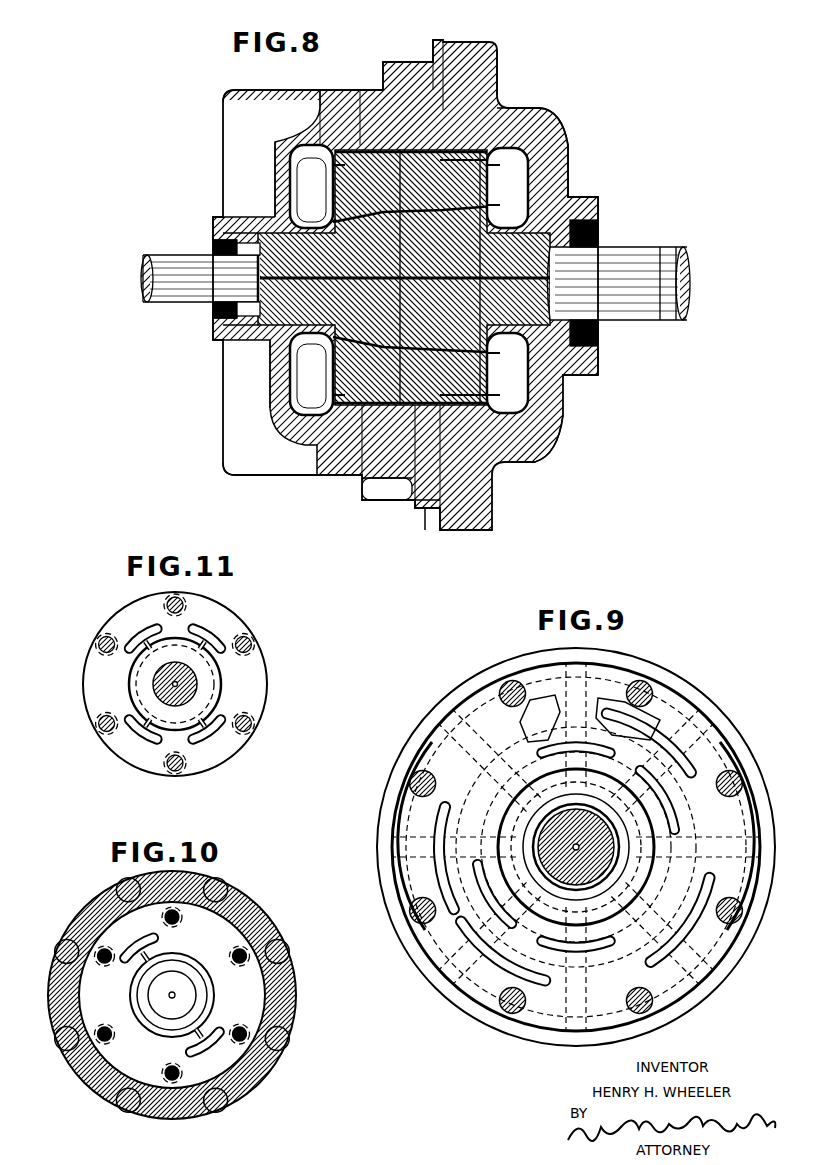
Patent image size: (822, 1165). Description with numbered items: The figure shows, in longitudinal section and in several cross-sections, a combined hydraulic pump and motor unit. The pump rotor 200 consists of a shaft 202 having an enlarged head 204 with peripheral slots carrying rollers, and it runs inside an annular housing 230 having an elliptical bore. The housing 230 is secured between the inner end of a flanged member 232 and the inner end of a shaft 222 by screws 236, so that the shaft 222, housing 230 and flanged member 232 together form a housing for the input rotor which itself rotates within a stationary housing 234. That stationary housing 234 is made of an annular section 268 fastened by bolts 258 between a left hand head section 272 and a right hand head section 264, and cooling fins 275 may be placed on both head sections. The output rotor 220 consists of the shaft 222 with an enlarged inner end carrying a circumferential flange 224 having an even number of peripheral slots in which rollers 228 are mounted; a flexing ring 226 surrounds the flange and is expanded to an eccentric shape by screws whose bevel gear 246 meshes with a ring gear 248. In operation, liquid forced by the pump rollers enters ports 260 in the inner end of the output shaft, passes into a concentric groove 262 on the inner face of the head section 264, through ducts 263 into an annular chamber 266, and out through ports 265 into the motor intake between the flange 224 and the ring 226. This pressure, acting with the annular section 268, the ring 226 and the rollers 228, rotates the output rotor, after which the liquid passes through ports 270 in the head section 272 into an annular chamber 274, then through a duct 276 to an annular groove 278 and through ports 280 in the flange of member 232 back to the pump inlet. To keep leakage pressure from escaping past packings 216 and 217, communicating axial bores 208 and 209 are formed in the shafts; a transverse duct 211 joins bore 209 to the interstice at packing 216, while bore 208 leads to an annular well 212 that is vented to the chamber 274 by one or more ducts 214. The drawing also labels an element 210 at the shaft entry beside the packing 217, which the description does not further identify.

In FIG. 8, the pump rotor 200 is at (143, 255).
In FIG. 8, the shaft 202 is at (150, 272).
In FIG. 11, the shaft 202 is at (160, 682).
In FIG. 9, the shaft 202 is at (560, 847).
In FIG. 8, the enlarged head 204 is at (360, 475).
In FIG. 8, the axial bore 208 is at (240, 300).
In FIG. 11, the axial bore 208 is at (173, 684).
In FIG. 9, the axial bore 208 is at (592, 847).
In FIG. 8, the axial bore 209 is at (619, 283).
In FIG. 8, the bearing 210 is at (240, 250).
In FIG. 8, the transverse duct 211 is at (600, 262).
In FIG. 8, the annular well 212 is at (215, 228).
In FIG. 8, the duct 214 is at (280, 226).
In FIG. 8, the packing 216 is at (600, 236).
In FIG. 8, the packing 217 is at (215, 332).
In FIG. 8, the output rotor 220 is at (678, 245).
In FIG. 10, the output rotor 220 is at (270, 902).
In FIG. 8, the shaft 222 is at (660, 325).
In FIG. 8, the circumferential flange 224 is at (550, 150).
In FIG. 10, the circumferential flange 224 is at (60, 995).
In FIG. 8, the flexing ring 226 is at (497, 112).
In FIG. 8, the rollers 228 is at (420, 480).
In FIG. 10, the rollers 228 is at (60, 945).
In FIG. 8, the annular housing 230 is at (488, 100).
In FIG. 8, the flanged member 232 is at (285, 205).
In FIG. 11, the flanged member 232 is at (264, 684).
In FIG. 9, the flanged member 232 is at (588, 745).
In FIG. 8, the stationary housing 234 is at (428, 52).
In FIG. 11, the screws 236 is at (252, 648).
In FIG. 10, the screws 236 is at (104, 1028).
In FIG. 8, the bevel gear 246 is at (385, 92).
In FIG. 8, the ring gear 248 is at (462, 45).
In FIG. 9, the bolts 258 is at (513, 682).
In FIG. 8, the ports 260 is at (507, 282).
In FIG. 10, the ports 260 is at (126, 962).
In FIG. 8, the concentric groove 262 is at (507, 283).
In FIG. 8, the ducts 263 is at (507, 288).
In FIG. 8, the right hand head section 264 is at (555, 200).
In FIG. 8, the ports 265 is at (548, 128).
In FIG. 8, the annular chamber 266 is at (528, 160).
In FIG. 8, the annular section 268 is at (405, 100).
In FIG. 8, the ports 270 is at (345, 130).
In FIG. 9, the ports 270 is at (700, 760).
In FIG. 8, the left hand head section 272 is at (272, 170).
In FIG. 9, the left hand head section 272 is at (690, 715).
In FIG. 8, the annular chamber 274 is at (292, 165).
In FIG. 9, the annular chamber 274 is at (545, 700).
In FIG. 8, the cooling fins 275 is at (235, 96).
In FIG. 9, the cooling fins 275 is at (440, 748).
In FIG. 8, the duct 276 is at (321, 280).
In FIG. 9, the duct 276 is at (478, 792).
In FIG. 8, the annular groove 278 is at (311, 283).
In FIG. 9, the annular groove 278 is at (690, 790).
In FIG. 8, the ports 280 is at (311, 280).
In FIG. 11, the ports 280 is at (145, 628).